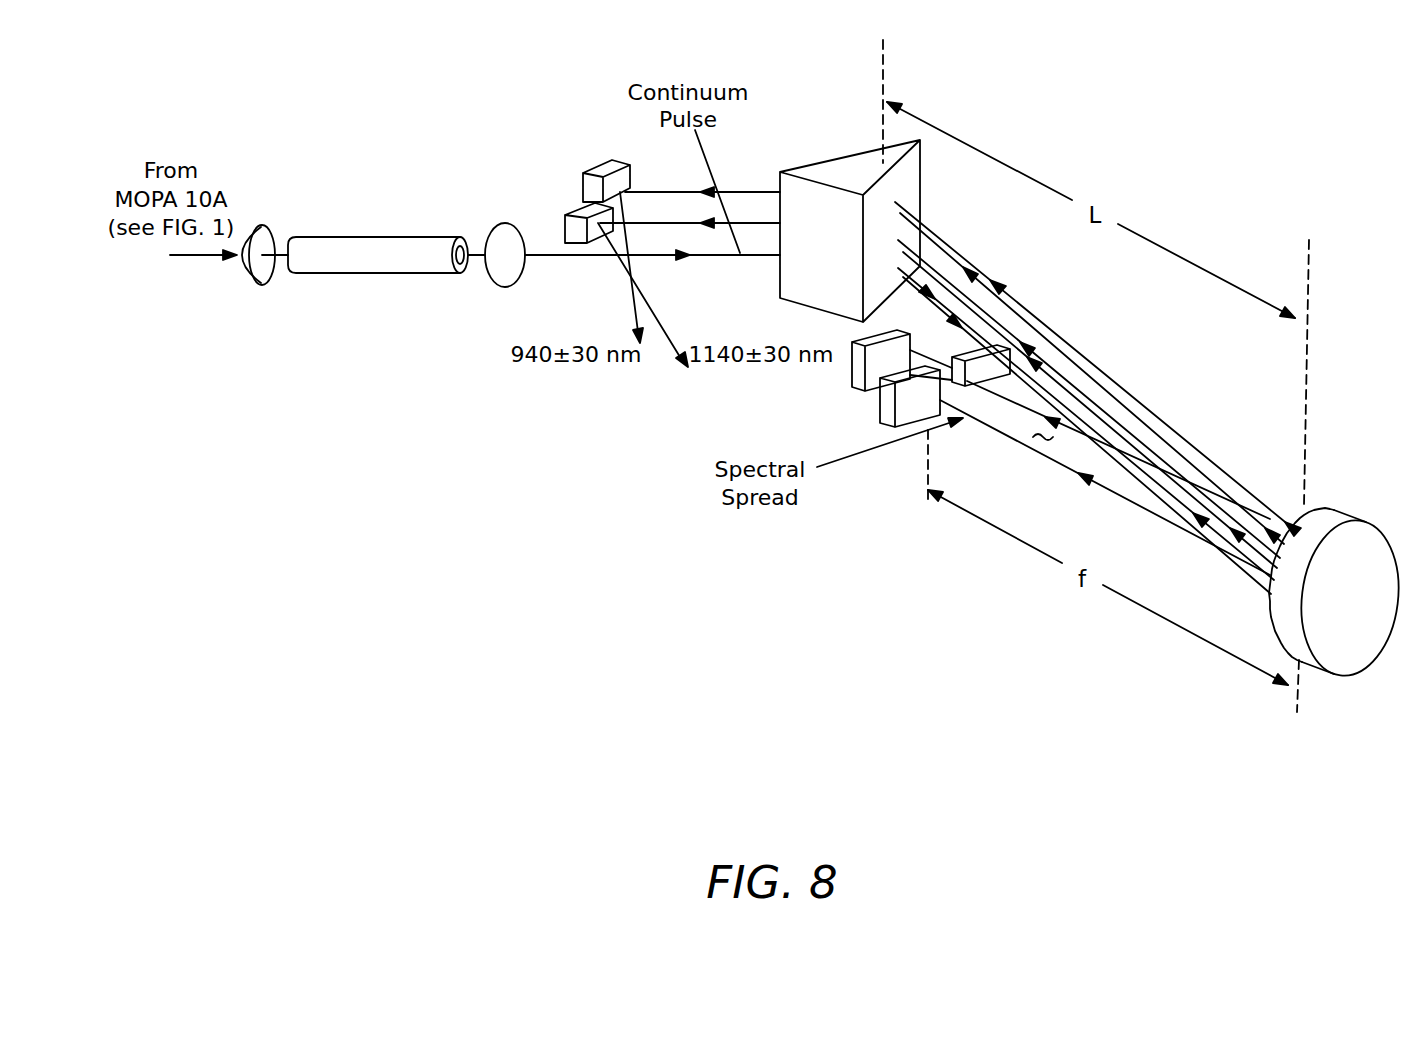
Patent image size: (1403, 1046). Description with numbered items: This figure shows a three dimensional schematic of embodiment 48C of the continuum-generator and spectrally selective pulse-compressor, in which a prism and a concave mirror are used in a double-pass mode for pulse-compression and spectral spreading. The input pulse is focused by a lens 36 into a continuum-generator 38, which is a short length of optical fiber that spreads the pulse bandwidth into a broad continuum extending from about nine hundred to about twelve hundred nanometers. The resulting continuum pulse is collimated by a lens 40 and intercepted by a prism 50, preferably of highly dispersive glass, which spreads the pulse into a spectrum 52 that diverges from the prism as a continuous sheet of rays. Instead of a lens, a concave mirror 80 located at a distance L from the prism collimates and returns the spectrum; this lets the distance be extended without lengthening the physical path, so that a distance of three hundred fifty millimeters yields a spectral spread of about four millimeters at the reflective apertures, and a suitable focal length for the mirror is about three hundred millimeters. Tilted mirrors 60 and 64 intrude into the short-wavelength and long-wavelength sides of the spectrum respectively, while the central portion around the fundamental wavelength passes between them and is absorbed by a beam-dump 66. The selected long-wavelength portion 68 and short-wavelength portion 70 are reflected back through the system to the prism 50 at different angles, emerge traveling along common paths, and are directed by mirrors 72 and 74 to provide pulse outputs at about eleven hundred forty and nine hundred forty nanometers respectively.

The lens 36 is at (266, 271).
The continuum-generator 38 is at (348, 240).
The lens 40 is at (495, 271).
The mirror 72 is at (572, 213).
The mirror 74 is at (612, 160).
The prism 50 is at (850, 173).
The selected long-wavelength portion 68 is at (913, 250).
The selected short-wavelength portion 70 is at (953, 244).
The spectrum 52 is at (1000, 343).
The tilted mirror 64 is at (957, 345).
The beam-dump 66 is at (852, 363).
The tilted mirror 60 is at (880, 397).
The concave mirror 80 is at (1333, 507).
The spectrally selective pulse-compressor embodiment 48C is at (637, 650).